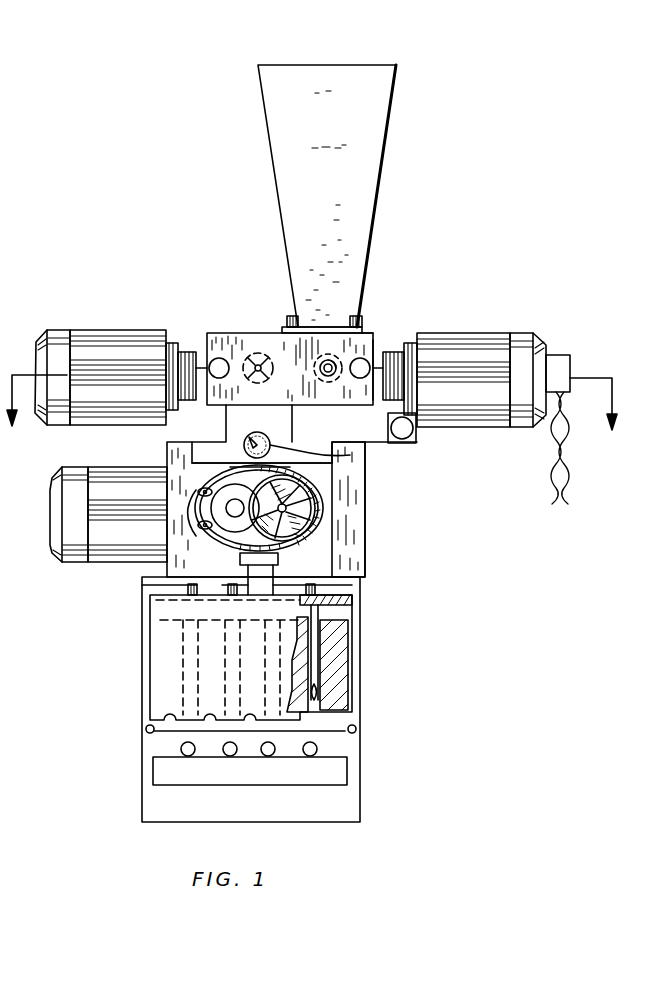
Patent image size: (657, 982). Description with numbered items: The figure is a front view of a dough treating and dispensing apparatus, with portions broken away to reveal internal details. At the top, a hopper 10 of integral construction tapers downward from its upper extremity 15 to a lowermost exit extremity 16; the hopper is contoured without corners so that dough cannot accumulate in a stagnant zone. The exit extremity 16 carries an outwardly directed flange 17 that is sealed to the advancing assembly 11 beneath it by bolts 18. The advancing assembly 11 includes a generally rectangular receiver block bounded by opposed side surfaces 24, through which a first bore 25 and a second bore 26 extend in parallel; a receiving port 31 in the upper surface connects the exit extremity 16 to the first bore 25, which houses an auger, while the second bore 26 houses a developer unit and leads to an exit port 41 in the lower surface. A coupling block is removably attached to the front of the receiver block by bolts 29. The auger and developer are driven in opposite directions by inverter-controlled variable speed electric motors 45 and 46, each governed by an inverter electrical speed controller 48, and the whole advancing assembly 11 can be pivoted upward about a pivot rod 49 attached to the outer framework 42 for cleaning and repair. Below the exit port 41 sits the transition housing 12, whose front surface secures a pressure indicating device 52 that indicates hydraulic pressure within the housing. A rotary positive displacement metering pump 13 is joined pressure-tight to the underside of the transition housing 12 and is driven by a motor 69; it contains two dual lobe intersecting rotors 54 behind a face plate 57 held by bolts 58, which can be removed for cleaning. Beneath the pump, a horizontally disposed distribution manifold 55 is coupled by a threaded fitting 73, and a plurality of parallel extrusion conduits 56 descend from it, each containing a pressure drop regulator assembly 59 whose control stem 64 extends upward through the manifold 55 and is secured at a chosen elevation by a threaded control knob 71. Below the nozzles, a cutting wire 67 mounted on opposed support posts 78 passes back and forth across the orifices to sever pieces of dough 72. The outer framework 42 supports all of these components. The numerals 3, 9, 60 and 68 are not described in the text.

The section line 3- 3 is at (311, 416).
The partial numeral 9 is at (12, 370).
The hopper 10 is at (336, 139).
The advancing assembly 11 is at (216, 286).
The transition housing 12 is at (226, 419).
The metering pump 13 is at (322, 533).
The upper extremity 15 is at (257, 66).
The exit extremity 16 is at (314, 326).
The flange 17 is at (290, 328).
The bolts 18 is at (352, 316).
The side surfaces 24 is at (374, 355).
The first bore 25 is at (333, 384).
The second bore 26 is at (274, 384).
The bolts 29 is at (242, 368).
The receiving port 31 is at (364, 340).
The exit port 41 is at (226, 428).
The outer framework 42 is at (366, 492).
The electric motor 45 is at (456, 333).
The electric motor 46 is at (86, 333).
The inverter electrical speed controller 48 is at (554, 354).
The pivot rod 49 is at (416, 429).
The pressure indicating device 52 is at (330, 448).
The rotors 54 is at (302, 484).
The distribution manifold 55 is at (164, 628).
The extrusion conduits 56 is at (224, 662).
The face plate 57 is at (244, 446).
The bolts 58 is at (195, 530).
The pressure drop regulator assembly 59 is at (348, 662).
The lower housing 60 is at (320, 588).
The control stem 64 is at (346, 605).
The cutting wire 67 is at (152, 735).
The control panel 68 is at (266, 779).
The motor 69 is at (49, 527).
The threaded control knob 71 is at (188, 588).
The pieces of dough 72 is at (180, 750).
The threaded fitting 73 is at (280, 556).
The support posts 78 is at (354, 728).